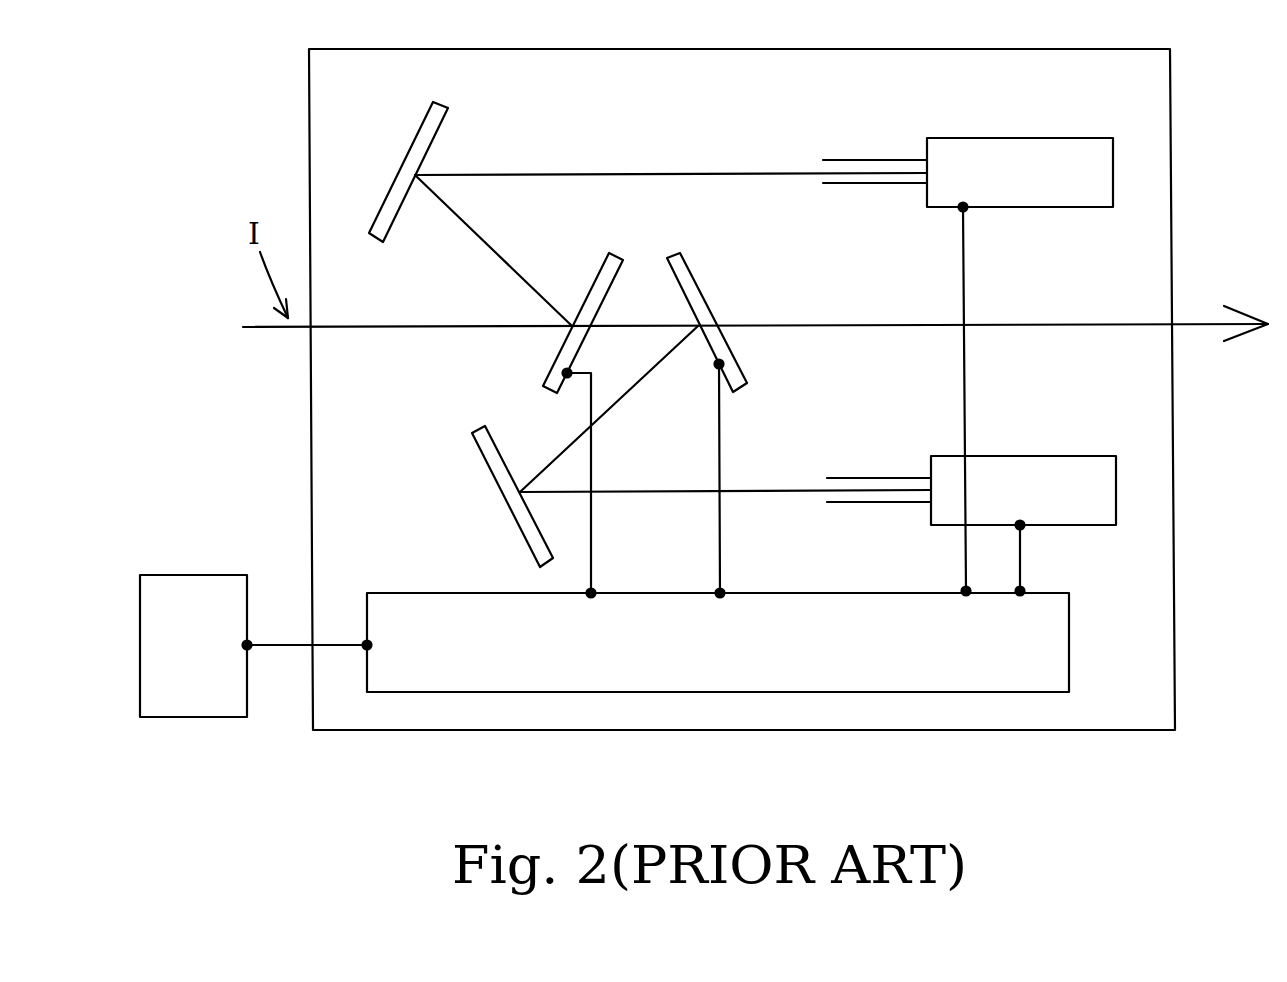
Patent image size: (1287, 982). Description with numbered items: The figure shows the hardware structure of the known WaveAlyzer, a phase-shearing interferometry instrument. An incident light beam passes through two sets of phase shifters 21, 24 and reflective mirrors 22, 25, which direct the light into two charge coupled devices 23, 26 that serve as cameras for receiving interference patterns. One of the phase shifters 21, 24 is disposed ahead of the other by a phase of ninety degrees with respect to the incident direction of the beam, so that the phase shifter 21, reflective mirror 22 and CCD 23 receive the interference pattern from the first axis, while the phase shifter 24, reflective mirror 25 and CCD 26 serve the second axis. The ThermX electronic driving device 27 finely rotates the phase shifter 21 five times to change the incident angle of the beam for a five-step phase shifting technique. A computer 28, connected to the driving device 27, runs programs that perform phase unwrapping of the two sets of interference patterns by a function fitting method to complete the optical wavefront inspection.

The phase shifter 21 is at (563, 355).
The reflective mirror 22 is at (433, 125).
The charge coupled device 23 is at (1068, 162).
The phase shifter 24 is at (687, 280).
The reflective mirror 25 is at (532, 534).
The charge coupled device 26 is at (1072, 478).
The ThermX electronic driving device 27 is at (1038, 640).
The computer 28 is at (207, 597).